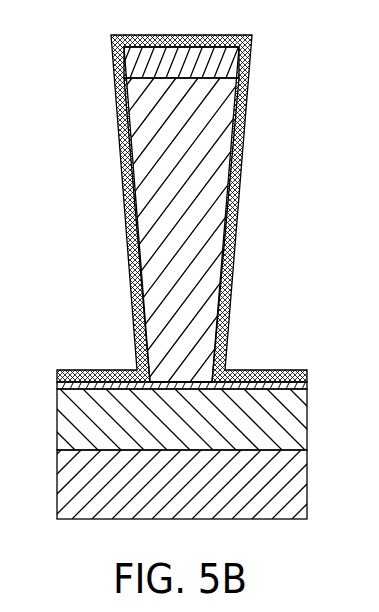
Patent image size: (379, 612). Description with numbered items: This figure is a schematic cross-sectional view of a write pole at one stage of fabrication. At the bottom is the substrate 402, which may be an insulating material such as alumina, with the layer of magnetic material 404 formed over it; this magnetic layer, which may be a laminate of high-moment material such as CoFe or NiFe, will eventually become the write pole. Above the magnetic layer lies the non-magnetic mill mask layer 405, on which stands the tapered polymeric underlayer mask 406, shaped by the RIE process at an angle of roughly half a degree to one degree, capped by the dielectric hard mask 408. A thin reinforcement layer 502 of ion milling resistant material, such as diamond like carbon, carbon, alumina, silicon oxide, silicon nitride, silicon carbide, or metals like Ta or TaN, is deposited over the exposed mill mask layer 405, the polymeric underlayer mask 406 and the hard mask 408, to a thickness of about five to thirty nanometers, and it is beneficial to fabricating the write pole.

The substrate 402 is at (161, 496).
The layer of magnetic material 404 is at (161, 424).
The non-magnetic mill mask layer 405 is at (57, 385).
The polymeric underlayer mask 406 is at (162, 135).
The dielectric hard mask 408 is at (162, 73).
The thin reinforcement layer 502 is at (240, 236).